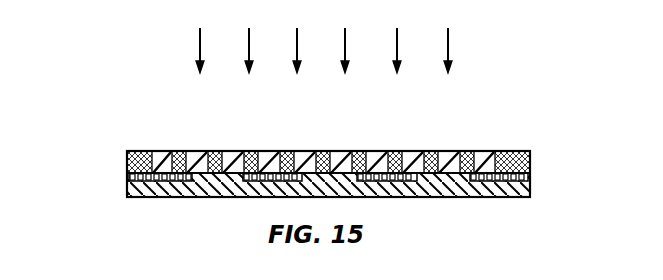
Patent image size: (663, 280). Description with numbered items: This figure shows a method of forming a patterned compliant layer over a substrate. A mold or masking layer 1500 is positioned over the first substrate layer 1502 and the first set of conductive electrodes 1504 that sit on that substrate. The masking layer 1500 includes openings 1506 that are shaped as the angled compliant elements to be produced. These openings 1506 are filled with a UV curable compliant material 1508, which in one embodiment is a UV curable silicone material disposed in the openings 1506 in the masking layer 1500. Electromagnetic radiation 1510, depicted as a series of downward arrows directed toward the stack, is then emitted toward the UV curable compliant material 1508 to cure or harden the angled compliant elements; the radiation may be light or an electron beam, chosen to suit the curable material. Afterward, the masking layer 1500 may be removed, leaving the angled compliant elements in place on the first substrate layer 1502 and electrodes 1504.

The masking layer 1500 is at (530, 152).
The first substrate layer 1502 is at (126, 190).
The first set of conductive electrodes 1504 is at (530, 177).
The openings 1506 is at (268, 138).
The UV curable compliant material 1508 is at (202, 150).
The electromagnetic radiation 1510 is at (448, 47).